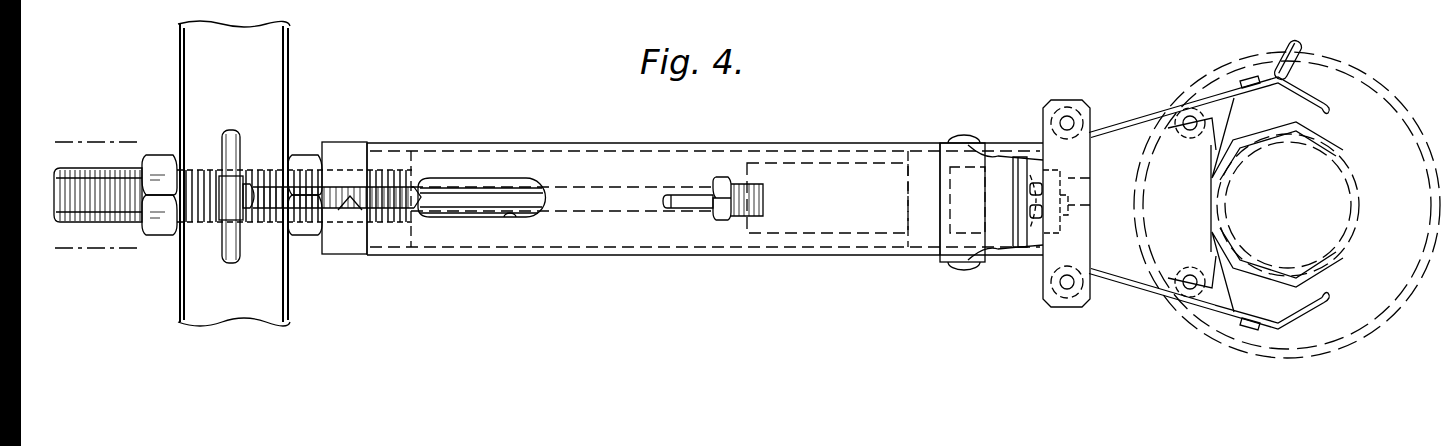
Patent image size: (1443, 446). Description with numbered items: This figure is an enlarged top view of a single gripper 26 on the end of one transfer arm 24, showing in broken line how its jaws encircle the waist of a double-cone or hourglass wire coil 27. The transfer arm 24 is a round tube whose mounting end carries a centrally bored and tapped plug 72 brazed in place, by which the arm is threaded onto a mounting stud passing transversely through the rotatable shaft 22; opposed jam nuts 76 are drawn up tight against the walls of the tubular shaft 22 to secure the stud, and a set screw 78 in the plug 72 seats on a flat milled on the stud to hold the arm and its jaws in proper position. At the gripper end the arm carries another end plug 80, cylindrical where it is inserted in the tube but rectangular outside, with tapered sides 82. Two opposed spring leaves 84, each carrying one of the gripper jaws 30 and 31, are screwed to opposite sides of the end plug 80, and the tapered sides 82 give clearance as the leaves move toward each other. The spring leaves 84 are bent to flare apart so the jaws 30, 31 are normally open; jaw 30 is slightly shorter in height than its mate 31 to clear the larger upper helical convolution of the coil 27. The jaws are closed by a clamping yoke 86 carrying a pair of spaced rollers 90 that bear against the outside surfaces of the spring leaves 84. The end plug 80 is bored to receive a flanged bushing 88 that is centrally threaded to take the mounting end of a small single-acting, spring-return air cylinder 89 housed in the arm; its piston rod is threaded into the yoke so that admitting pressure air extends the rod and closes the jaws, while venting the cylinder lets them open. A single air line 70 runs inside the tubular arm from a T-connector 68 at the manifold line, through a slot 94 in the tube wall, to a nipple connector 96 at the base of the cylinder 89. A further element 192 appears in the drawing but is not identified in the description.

The rotatable shaft 22 is at (262, 310).
The transfer arm 24 is at (600, 256).
The gripper 26 is at (1183, 346).
The double-cone wire coil 27 is at (1268, 350).
The gripper jaw 30 is at (1332, 114).
The gripper jaw 31 is at (1312, 318).
The T-connector 68 is at (228, 208).
The air line 70 is at (446, 200).
The plug 72 is at (348, 140).
The jam nuts 76 is at (160, 160).
The set screw 78 is at (357, 215).
The end plug 80 is at (948, 170).
The tapered sides 82 is at (968, 138).
The spring leaves 84 is at (1138, 118).
The clamping yoke 86 is at (1052, 270).
The flanged bushing 88 is at (1028, 246).
The air cylinder 89 is at (825, 233).
The rollers 90 is at (1070, 298).
The slot 94 is at (510, 206).
The nipple connector 96 is at (722, 222).
The spring 192 is at (1042, 172).